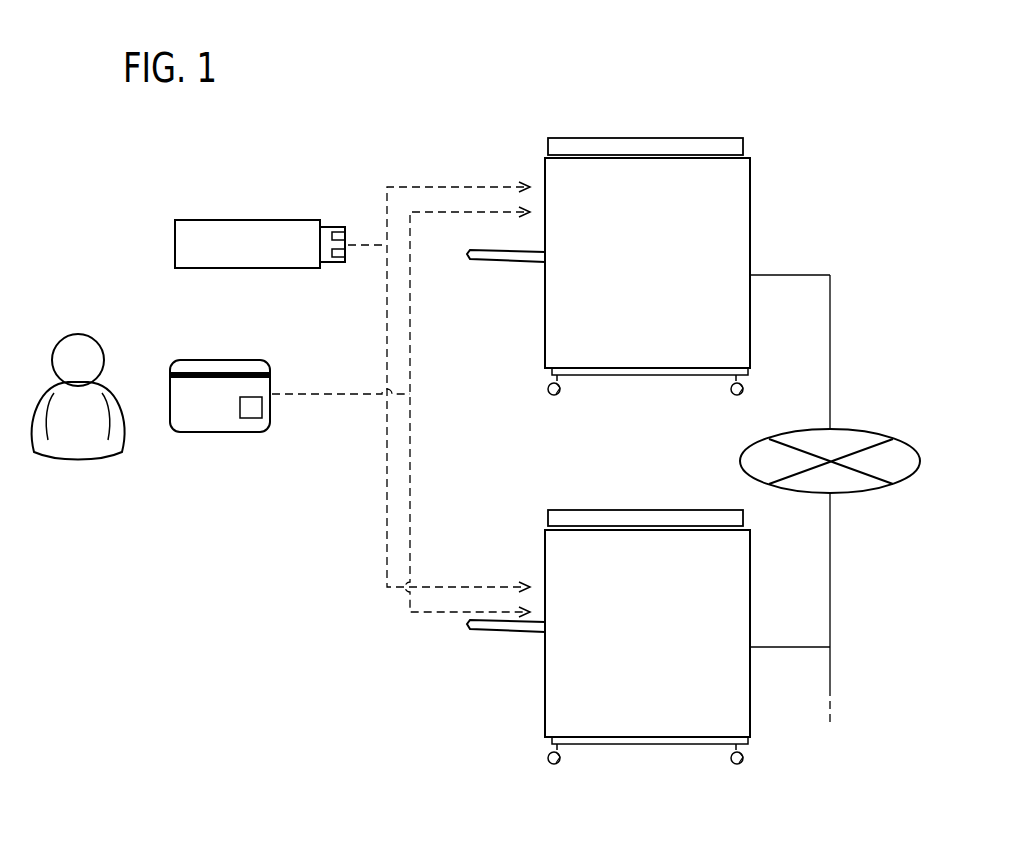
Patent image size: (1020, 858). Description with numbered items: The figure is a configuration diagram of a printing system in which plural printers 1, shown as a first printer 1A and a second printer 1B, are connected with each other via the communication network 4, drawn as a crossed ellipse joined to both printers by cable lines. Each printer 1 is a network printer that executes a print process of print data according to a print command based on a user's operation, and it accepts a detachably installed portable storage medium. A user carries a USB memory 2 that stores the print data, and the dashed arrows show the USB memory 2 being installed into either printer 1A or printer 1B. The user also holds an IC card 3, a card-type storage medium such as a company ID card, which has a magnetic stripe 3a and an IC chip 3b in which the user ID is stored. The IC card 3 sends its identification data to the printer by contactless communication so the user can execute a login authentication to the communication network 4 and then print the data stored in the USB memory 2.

The printer 1 is at (633, 420).
The printer 1A is at (510, 165).
The printer 1B is at (510, 573).
The USB memory 2 is at (284, 218).
The IC card 3 is at (255, 378).
The magnetic stripe 3a is at (270, 376).
The IC chip 3b is at (262, 410).
The communication network 4 is at (872, 430).